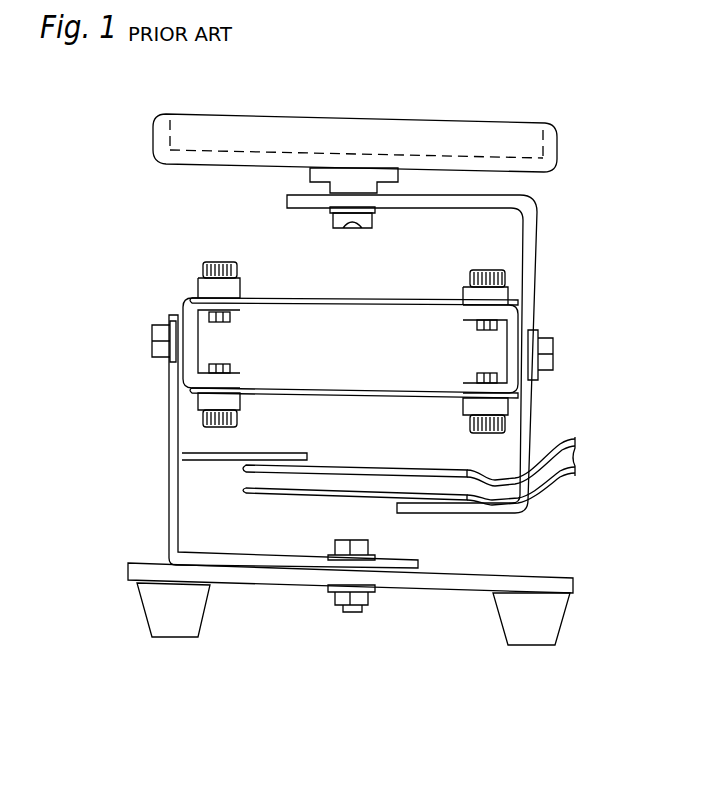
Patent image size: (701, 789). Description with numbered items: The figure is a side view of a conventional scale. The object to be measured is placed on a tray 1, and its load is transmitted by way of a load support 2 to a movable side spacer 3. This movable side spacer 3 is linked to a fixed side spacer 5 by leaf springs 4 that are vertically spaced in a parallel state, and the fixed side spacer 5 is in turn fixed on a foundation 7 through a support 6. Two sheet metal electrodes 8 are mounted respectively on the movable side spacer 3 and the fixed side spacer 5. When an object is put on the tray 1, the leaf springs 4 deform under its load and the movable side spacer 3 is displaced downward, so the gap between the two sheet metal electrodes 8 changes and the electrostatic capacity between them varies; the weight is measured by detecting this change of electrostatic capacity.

The tray 1 is at (550, 148).
The load support 2 is at (533, 248).
The movable side spacer 3 is at (513, 317).
The leaf springs 4 is at (290, 392).
The fixed side spacer 5 is at (192, 302).
The support 6 is at (177, 493).
The foundation 7 is at (437, 583).
The sheet metal electrodes 8 is at (335, 495).